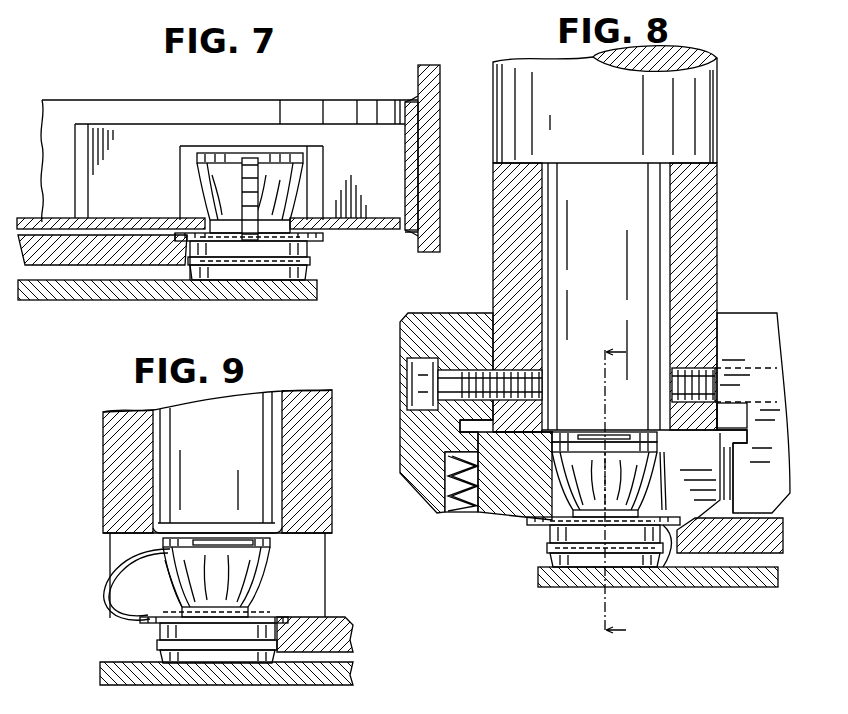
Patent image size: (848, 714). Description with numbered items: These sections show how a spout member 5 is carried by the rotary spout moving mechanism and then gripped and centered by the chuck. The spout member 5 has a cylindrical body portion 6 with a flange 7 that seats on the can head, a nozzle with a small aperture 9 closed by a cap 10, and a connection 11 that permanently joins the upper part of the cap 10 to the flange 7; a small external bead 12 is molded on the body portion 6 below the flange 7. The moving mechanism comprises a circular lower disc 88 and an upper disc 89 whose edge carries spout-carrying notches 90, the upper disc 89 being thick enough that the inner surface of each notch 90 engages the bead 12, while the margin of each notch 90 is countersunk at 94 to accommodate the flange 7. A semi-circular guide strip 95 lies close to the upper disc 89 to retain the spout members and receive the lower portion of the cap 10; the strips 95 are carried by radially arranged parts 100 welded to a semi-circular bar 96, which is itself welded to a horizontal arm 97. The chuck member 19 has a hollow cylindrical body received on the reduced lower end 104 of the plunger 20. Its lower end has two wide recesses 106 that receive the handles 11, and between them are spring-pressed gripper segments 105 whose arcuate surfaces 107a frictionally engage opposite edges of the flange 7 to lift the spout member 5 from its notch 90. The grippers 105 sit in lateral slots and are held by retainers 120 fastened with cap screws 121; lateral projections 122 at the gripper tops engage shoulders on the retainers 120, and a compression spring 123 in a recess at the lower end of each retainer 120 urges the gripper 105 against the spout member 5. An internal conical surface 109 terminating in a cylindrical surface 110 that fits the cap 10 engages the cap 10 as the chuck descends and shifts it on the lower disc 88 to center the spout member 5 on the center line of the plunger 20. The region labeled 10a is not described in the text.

In FIG. 7, the spout member 5 is at (319, 253).
In FIG. 8, the spout member 5 is at (540, 564).
In FIG. 9, the spout member 5 is at (147, 651).
In FIG. 7, the body portion 6 is at (306, 262).
In FIG. 7, the flange 7 is at (323, 237).
In FIG. 9, the flange 7 is at (140, 621).
In FIG. 8, the aperture 9 is at (623, 492).
In FIG. 7, the cap 10 is at (192, 187).
In FIG. 8, the cap 10 is at (655, 450).
In FIG. 9, the cap 10 is at (227, 590).
In FIG. 8, the flange of spool member 10a is at (537, 527).
In FIG. 7, the connection 11 is at (246, 203).
In FIG. 8, the connection 11 is at (643, 481).
In FIG. 9, the connection 11 is at (107, 571).
In FIG. 7, the bead 12 is at (306, 258).
In FIG. 8, the bead 12 is at (593, 548).
In FIG. 8, the chuck member 19 is at (708, 238).
In FIG. 9, the chuck member 19 is at (110, 435).
In FIG. 8, the plunger 20 is at (703, 92).
In FIG. 7, the lower disc 88 is at (132, 292).
In FIG. 8, the lower disc 88 is at (753, 578).
In FIG. 9, the lower disc 88 is at (340, 673).
In FIG. 7, the upper disc 89 is at (85, 258).
In FIG. 8, the upper disc 89 is at (753, 528).
In FIG. 9, the upper disc 89 is at (333, 617).
In FIG. 7, the spout-carrying notches 90 is at (196, 258).
In FIG. 8, the spout-carrying notches 90 is at (663, 532).
In FIG. 9, the spout-carrying notches 90 is at (278, 655).
In FIG. 7, the countersunk margin 94 is at (178, 238).
In FIG. 7, the guide strip 95 is at (133, 219).
In FIG. 7, the semi-circular bar 96 is at (307, 103).
In FIG. 7, the horizontal arm 97 is at (438, 90).
In FIG. 7, the parts 100 is at (182, 113).
In FIG. 8, the lower end of plunger 104 is at (613, 226).
In FIG. 9, the lower end of plunger 104 is at (228, 442).
In FIG. 8, the gripper segments 105 is at (503, 502).
In FIG. 9, the gripper segments 105 is at (217, 512).
In FIG. 8, the recesses 106 is at (593, 426).
In FIG. 9, the recesses 106 is at (120, 544).
In FIG. 8, the arcuate surfaces 107a is at (675, 528).
In FIG. 8, the internal conical surface 109 is at (660, 503).
In FIG. 9, the internal conical surface 109 is at (167, 590).
In FIG. 8, the cylindrical surface 110 is at (640, 432).
In FIG. 9, the cylindrical surface 110 is at (184, 546).
In FIG. 8, the retainers 120 is at (408, 423).
In FIG. 8, the cap screws 121 is at (412, 372).
In FIG. 8, the lateral projections 122 is at (470, 434).
In FIG. 8, the compression spring 123 is at (447, 488).